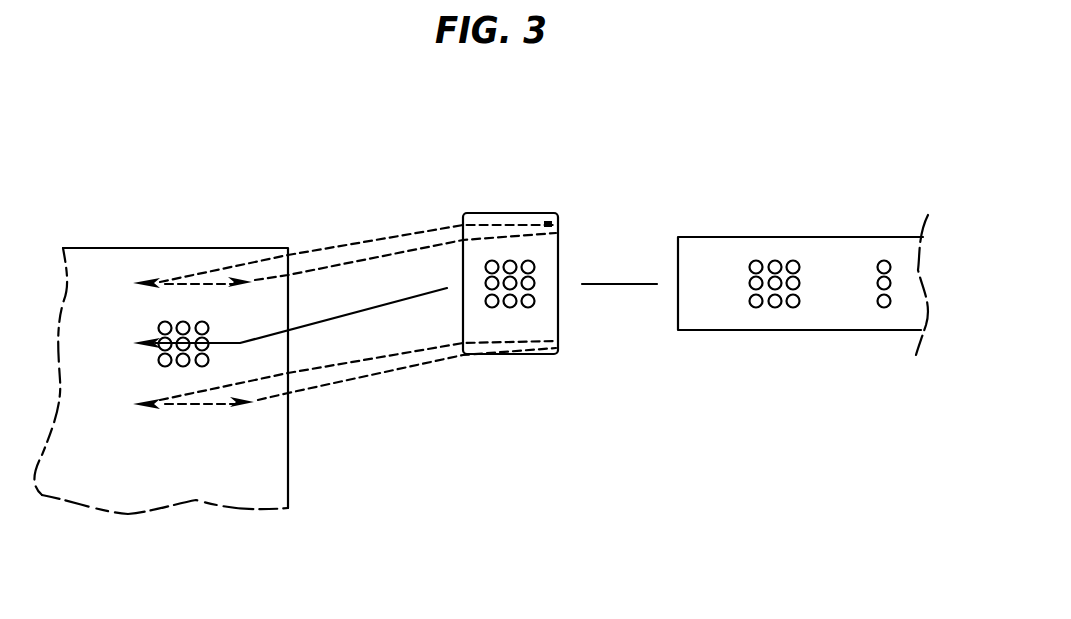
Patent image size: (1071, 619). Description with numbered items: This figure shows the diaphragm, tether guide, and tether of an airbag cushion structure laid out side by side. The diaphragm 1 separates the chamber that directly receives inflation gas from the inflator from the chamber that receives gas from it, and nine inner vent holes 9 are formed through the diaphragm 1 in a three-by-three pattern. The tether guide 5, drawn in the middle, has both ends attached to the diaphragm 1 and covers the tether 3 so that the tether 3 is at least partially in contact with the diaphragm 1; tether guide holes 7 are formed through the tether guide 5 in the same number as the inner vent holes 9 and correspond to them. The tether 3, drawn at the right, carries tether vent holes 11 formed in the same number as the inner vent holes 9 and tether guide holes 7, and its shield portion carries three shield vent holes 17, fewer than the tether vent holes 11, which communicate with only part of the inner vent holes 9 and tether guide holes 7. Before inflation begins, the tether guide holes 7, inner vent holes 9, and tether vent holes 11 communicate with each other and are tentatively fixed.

The diaphragm 1 is at (108, 286).
The tether 3 is at (826, 278).
The tether guide 5 is at (498, 252).
The tether guide holes 7 is at (513, 262).
The inner vent holes 9 is at (183, 366).
The tether vent holes 11 is at (777, 258).
The shield vent holes 17 is at (876, 262).